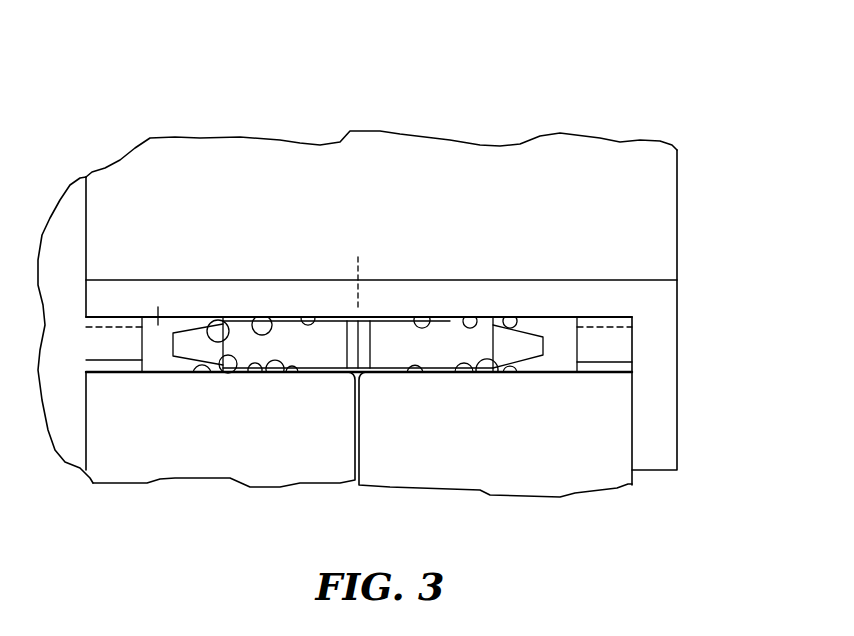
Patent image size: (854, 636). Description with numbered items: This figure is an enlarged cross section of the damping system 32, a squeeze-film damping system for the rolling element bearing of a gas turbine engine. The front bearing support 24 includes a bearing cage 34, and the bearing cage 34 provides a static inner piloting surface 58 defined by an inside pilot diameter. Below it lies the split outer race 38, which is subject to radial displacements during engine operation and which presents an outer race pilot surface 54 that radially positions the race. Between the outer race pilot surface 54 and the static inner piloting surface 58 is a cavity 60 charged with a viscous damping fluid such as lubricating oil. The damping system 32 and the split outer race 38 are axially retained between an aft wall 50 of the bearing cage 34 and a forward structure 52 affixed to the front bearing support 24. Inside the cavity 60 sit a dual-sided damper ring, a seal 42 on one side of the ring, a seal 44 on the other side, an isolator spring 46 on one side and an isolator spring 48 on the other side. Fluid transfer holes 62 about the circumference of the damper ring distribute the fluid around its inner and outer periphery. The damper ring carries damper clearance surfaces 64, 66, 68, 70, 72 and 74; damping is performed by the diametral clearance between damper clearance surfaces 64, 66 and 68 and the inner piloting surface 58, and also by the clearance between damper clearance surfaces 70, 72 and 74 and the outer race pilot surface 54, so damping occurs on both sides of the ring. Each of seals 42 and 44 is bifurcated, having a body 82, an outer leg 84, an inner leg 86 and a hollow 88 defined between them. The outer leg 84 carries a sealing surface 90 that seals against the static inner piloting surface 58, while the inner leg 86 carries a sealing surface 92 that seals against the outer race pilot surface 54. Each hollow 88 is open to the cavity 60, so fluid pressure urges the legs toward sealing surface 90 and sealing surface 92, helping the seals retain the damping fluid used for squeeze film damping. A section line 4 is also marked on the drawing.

The section line 4- 4 is at (593, 393).
The front bearing support 24 is at (338, 136).
The damping system 32 is at (430, 98).
The bearing cage 34 is at (632, 300).
The split outer race 38 is at (380, 488).
The seal 42 is at (147, 372).
The seal 44 is at (570, 377).
The isolator spring 46 is at (113, 317).
The isolator spring 48 is at (660, 320).
The aft wall 50 is at (677, 395).
The forward structure 52 is at (62, 196).
The outer race pilot surface 54 is at (297, 372).
The static inner piloting surface 58 is at (312, 318).
The cavity 60 is at (393, 323).
The fluid transfer holes 62 is at (380, 323).
The damper clearance surface 64 is at (272, 318).
The damper clearance surface 66 is at (427, 313).
The damper clearance surface 68 is at (462, 318).
The damper clearance surface 70 is at (257, 372).
The damper clearance surface 72 is at (267, 372).
The damper clearance surface 74 is at (467, 372).
The body 82 is at (157, 317).
The outer leg 84 is at (243, 317).
The inner leg 86 is at (230, 372).
The hollow 88 is at (183, 345).
The sealing surface 90 is at (201, 317).
The sealing surface 92 is at (195, 372).